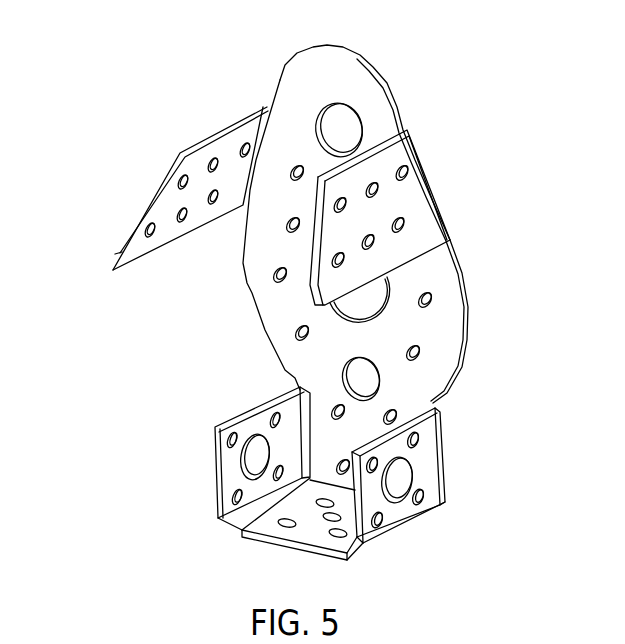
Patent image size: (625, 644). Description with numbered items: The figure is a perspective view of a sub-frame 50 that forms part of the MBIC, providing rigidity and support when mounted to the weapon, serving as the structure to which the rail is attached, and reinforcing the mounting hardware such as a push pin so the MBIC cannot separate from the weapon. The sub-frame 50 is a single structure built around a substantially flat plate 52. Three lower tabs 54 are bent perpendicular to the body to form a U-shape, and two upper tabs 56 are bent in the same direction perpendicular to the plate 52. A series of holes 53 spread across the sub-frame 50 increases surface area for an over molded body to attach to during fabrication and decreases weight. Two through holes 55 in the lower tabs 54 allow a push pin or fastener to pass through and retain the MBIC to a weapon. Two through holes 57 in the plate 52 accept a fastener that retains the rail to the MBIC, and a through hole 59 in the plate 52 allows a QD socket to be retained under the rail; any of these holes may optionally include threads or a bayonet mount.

The sub-frame 50 is at (391, 261).
The substantially flat plate 52 is at (447, 248).
The holes 53 is at (485, 409).
The lower tabs 54 is at (278, 473).
The through holes 55 is at (199, 429).
The upper tabs 56 is at (173, 205).
The through holes 57 is at (283, 252).
The through hole 59 is at (442, 289).